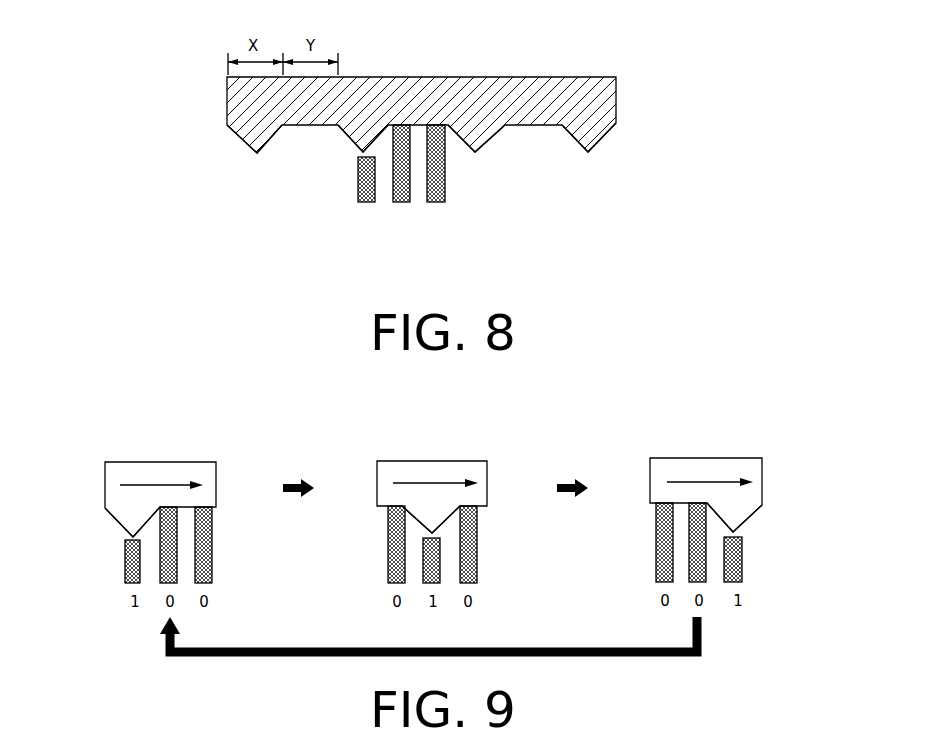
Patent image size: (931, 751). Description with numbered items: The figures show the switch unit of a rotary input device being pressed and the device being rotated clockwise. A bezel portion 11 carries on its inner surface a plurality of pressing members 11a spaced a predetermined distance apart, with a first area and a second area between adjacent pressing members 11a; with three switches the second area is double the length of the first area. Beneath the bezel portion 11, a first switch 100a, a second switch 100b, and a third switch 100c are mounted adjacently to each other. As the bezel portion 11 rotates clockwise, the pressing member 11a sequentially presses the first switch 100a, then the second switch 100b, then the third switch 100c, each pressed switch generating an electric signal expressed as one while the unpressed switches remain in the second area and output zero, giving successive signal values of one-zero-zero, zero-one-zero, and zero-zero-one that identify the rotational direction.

In FIG. 8, the bezel portion 11 is at (607, 98).
In FIG. 9, the bezel portion 11 is at (199, 468).
In FIG. 8, the pressing member 11a is at (363, 150).
In FIG. 9, the pressing member 11a is at (133, 535).
In FIG. 8, the first switch 100a is at (366, 202).
In FIG. 9, the first switch 100a is at (125, 560).
In FIG. 8, the second switch 100b is at (401, 202).
In FIG. 9, the second switch 100b is at (178, 537).
In FIG. 8, the third switch 100c is at (437, 202).
In FIG. 9, the third switch 100c is at (212, 568).